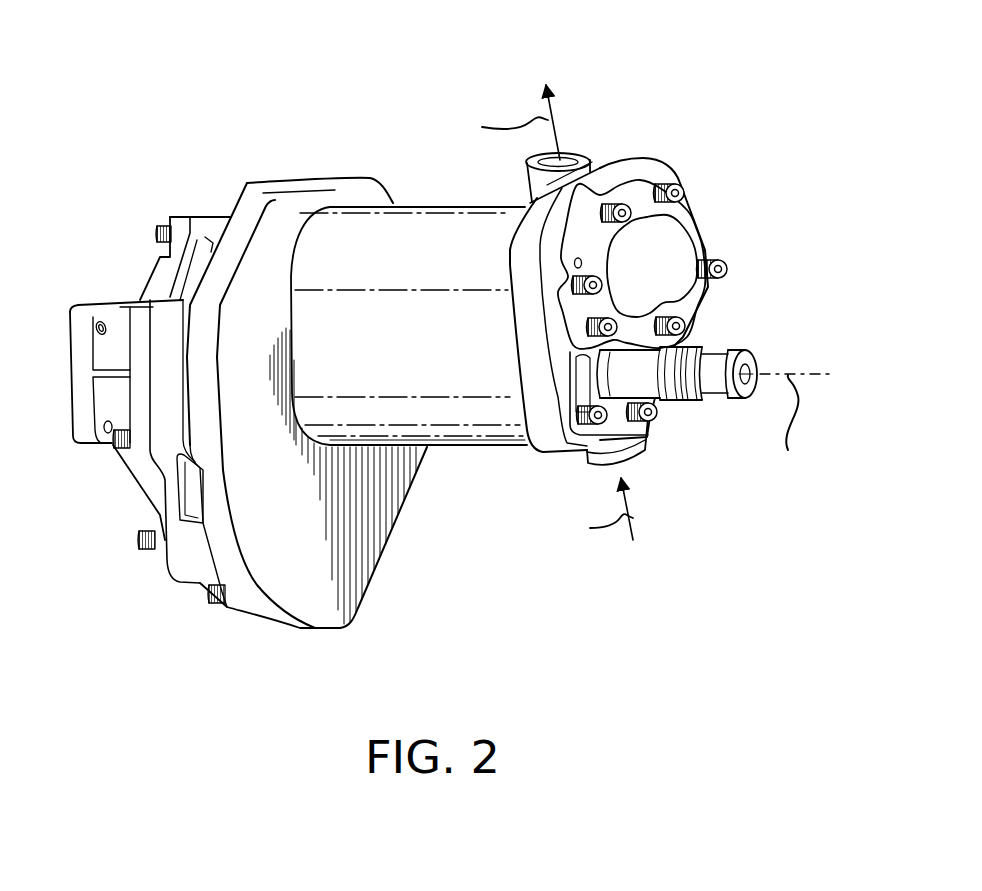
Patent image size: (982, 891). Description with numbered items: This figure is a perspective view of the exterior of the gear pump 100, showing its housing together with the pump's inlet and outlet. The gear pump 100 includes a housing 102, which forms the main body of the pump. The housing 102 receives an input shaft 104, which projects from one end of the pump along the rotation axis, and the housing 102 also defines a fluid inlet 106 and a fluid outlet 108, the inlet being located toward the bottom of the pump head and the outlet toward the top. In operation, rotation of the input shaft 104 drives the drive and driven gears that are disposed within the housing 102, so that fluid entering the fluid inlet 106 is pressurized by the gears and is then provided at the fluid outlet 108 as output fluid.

The gear pump 100 is at (170, 632).
The housing 102 is at (478, 440).
The input shaft 104 is at (777, 337).
The fluid inlet 106 is at (651, 474).
The fluid outlet 108 is at (578, 132).